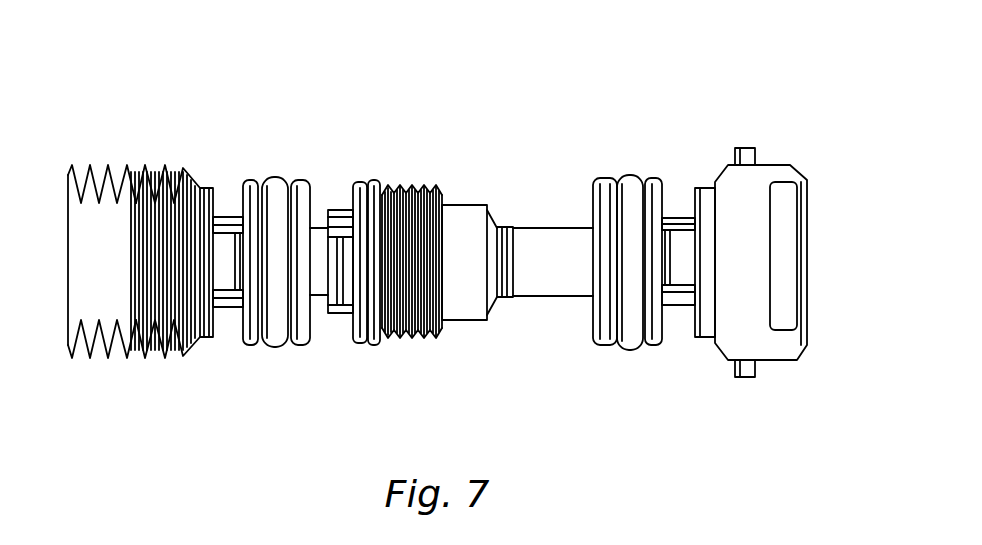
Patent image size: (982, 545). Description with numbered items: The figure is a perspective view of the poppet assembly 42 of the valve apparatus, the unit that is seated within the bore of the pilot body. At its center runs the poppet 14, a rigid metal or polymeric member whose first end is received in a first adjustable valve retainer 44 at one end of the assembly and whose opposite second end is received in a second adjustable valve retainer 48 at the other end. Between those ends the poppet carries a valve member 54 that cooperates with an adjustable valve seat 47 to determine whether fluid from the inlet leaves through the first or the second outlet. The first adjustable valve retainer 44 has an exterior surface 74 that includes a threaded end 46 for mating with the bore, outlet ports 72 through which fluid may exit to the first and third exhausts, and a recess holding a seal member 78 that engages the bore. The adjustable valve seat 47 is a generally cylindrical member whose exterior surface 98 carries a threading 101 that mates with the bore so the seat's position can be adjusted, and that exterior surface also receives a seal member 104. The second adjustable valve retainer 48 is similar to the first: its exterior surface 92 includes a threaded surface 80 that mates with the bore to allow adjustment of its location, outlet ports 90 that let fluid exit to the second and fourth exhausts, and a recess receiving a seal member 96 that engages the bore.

The poppet assembly 42 is at (120, 68).
The first adjustable valve retainer 44 is at (99, 305).
The threaded end 46 is at (158, 172).
The exterior surface 74 is at (137, 352).
The outlet ports 72 is at (215, 193).
The seal member 78 is at (275, 177).
The seal member 104 is at (373, 182).
The exterior surface 98 is at (412, 185).
The threading 101 is at (405, 340).
The adjustable valve seat 47 is at (417, 338).
The valve member 54 is at (462, 202).
The poppet 14 is at (541, 230).
The seal member 96 is at (630, 177).
The outlet ports 90 is at (680, 192).
The exterior surface 92 is at (766, 360).
The second adjustable valve retainer 48 is at (771, 165).
The threaded surface 80 is at (743, 147).